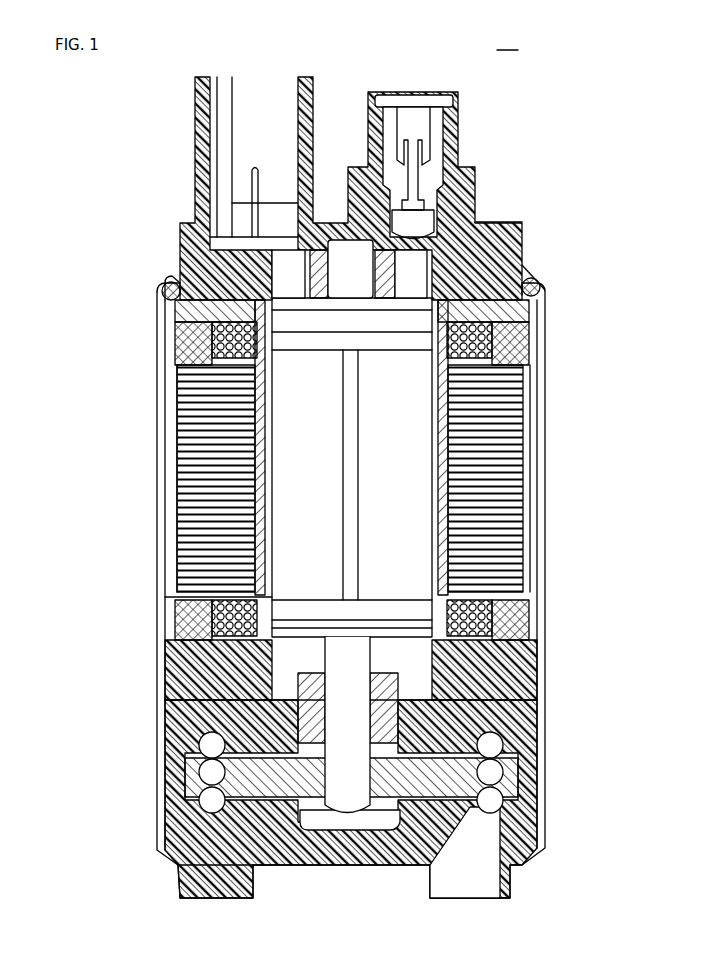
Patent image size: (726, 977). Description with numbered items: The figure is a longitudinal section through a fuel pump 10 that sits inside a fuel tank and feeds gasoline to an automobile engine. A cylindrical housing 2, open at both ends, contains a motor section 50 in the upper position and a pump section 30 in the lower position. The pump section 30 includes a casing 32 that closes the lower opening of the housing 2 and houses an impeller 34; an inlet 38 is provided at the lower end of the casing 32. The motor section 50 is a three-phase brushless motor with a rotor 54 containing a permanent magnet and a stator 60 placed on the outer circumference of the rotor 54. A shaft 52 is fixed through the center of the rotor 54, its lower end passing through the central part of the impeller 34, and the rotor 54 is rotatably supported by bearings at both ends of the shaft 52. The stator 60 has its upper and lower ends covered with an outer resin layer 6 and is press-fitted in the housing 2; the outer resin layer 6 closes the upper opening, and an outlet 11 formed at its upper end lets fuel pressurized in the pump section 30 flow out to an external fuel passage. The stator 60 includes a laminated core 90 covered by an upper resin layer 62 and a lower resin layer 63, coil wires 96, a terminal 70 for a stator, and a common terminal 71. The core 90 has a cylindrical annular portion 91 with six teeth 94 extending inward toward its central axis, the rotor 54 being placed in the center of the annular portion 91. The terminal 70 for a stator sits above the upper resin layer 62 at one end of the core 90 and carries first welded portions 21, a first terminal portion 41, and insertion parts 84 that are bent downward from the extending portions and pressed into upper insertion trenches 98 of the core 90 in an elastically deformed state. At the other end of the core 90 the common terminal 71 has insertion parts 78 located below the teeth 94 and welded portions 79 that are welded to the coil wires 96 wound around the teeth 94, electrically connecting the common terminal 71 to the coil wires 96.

The fuel pump 10 is at (507, 41).
The outlet 11 is at (436, 123).
The outer resin layer 6 is at (492, 222).
The first terminal portion 41 is at (273, 247).
The shaft 52 is at (252, 194).
The terminal for a stator 70 is at (165, 283).
The first welded portion 21 is at (162, 291).
The rotor 54 is at (180, 318).
The upper insertion trench 98 is at (212, 340).
The insertion part 84 is at (190, 345).
The teeth 94 is at (240, 394).
The annular portion 91 is at (200, 533).
The insertion part 78 is at (176, 603).
The coil wire 96 is at (215, 620).
The welded portion 79 is at (176, 660).
The common terminal 71 is at (182, 690).
The motor section 50 is at (562, 270).
The upper resin layer 62 is at (525, 352).
The housing 2 is at (540, 426).
The stator 60 is at (348, 447).
The core 90 is at (500, 525).
The lower resin layer 63 is at (520, 600).
The pump section 30 is at (386, 767).
The impeller 34 is at (500, 780).
The casing 32 is at (520, 812).
The inlet 38 is at (490, 882).